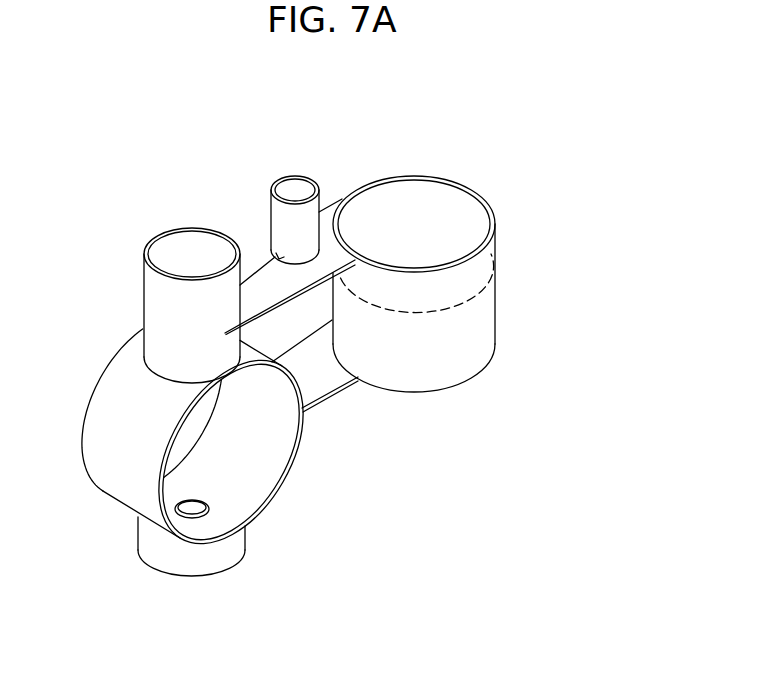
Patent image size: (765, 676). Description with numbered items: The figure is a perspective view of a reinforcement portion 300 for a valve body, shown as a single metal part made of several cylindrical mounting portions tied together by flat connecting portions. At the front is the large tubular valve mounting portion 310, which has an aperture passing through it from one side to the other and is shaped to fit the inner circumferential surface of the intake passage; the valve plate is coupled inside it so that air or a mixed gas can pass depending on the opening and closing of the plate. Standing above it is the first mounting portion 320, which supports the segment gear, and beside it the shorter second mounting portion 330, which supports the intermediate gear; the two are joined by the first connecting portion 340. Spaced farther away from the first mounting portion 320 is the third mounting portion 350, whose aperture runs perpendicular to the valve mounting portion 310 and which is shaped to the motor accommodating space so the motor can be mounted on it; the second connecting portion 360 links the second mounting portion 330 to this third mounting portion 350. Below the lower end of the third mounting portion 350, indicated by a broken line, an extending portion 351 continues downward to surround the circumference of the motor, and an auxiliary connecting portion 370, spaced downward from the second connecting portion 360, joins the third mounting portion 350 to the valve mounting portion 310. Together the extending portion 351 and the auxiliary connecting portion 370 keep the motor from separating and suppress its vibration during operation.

The reinforcement portion 300 is at (127, 107).
The valve mounting portion 310 is at (283, 483).
The first mounting portion 320 is at (172, 228).
The second mounting portion 330 is at (289, 176).
The first connecting portion 340 is at (262, 268).
The third mounting portion 350 is at (477, 193).
The extending portion 351 is at (497, 325).
The second connecting portion 360 is at (327, 207).
The auxiliary connecting portion 370 is at (328, 400).